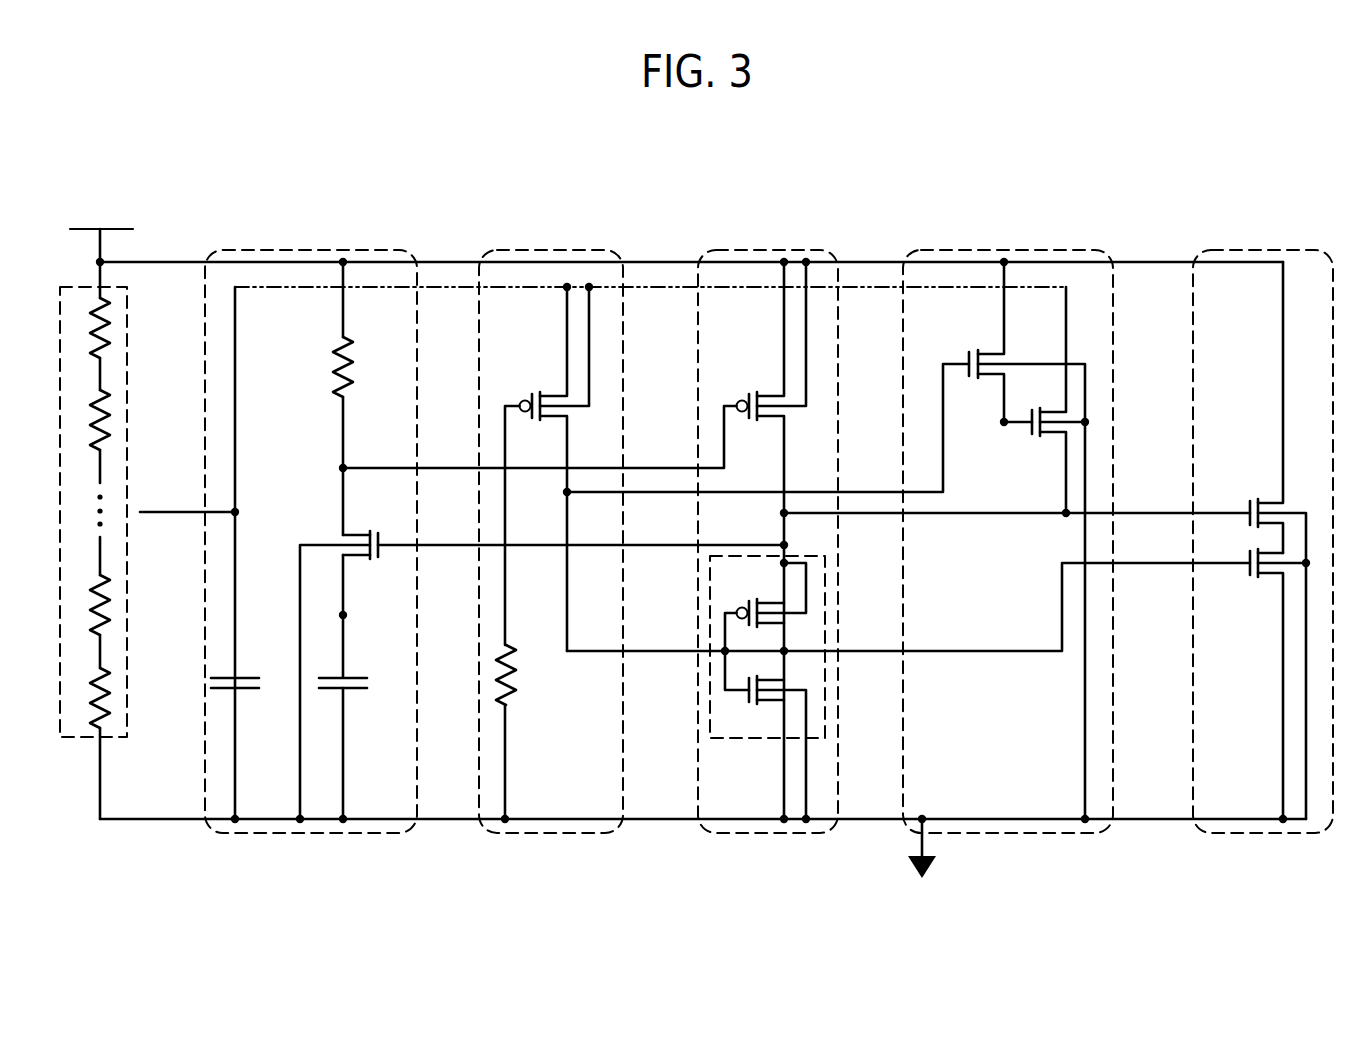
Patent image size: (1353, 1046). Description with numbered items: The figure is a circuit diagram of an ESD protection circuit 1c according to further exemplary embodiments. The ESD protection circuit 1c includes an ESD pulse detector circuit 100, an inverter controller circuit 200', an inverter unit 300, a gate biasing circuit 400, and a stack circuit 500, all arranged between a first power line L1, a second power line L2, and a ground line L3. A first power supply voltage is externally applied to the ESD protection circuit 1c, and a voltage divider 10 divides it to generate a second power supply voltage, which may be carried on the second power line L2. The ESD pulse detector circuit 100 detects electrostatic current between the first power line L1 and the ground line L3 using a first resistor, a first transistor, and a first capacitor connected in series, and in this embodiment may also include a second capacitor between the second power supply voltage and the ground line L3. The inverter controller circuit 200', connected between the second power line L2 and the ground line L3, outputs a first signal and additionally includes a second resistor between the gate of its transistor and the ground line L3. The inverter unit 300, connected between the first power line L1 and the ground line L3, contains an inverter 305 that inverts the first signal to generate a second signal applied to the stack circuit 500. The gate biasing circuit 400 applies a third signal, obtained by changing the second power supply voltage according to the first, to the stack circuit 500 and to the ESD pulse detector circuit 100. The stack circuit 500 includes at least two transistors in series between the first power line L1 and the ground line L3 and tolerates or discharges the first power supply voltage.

The ESD protection circuit 1c is at (1291, 177).
The voltage divider 10 is at (127, 737).
The ESD pulse detector circuit 100 is at (340, 250).
The inverter controller circuit 200' is at (551, 520).
The inverter unit 300 is at (768, 520).
The inverter 305 is at (765, 738).
The gate biasing circuit 400 is at (978, 250).
The stack circuit 500 is at (1265, 250).
The first power line L1 is at (448, 262).
The second power line L2 is at (660, 287).
The ground line L3 is at (432, 833).